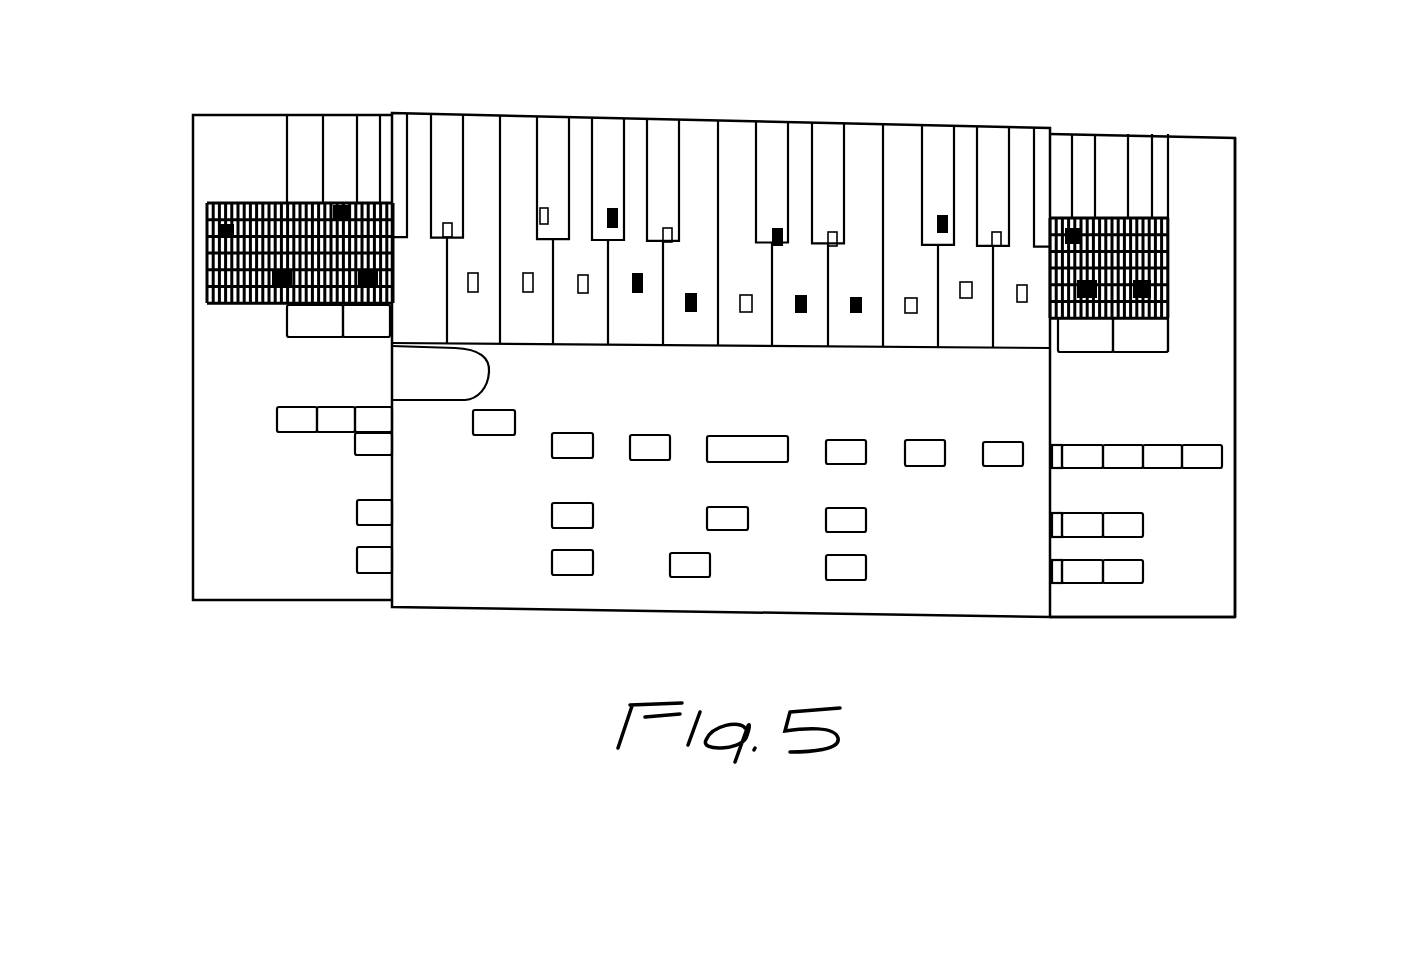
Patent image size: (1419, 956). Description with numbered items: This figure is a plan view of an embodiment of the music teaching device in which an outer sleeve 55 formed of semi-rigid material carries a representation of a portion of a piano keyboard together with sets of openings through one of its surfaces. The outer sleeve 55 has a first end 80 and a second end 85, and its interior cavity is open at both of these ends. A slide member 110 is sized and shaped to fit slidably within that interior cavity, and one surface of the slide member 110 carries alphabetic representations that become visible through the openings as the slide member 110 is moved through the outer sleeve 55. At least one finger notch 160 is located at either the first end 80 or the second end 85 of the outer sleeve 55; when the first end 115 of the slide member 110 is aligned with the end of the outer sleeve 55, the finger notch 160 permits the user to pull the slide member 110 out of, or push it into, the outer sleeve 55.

The outer sleeve 55 is at (721, 319).
The first end of the outer sleeve 80 is at (1052, 403).
The second end of the outer sleeve 85 is at (392, 472).
The slide member 110 is at (1143, 618).
The first end of the slide member 115 is at (1234, 320).
The finger notch 160 is at (487, 388).